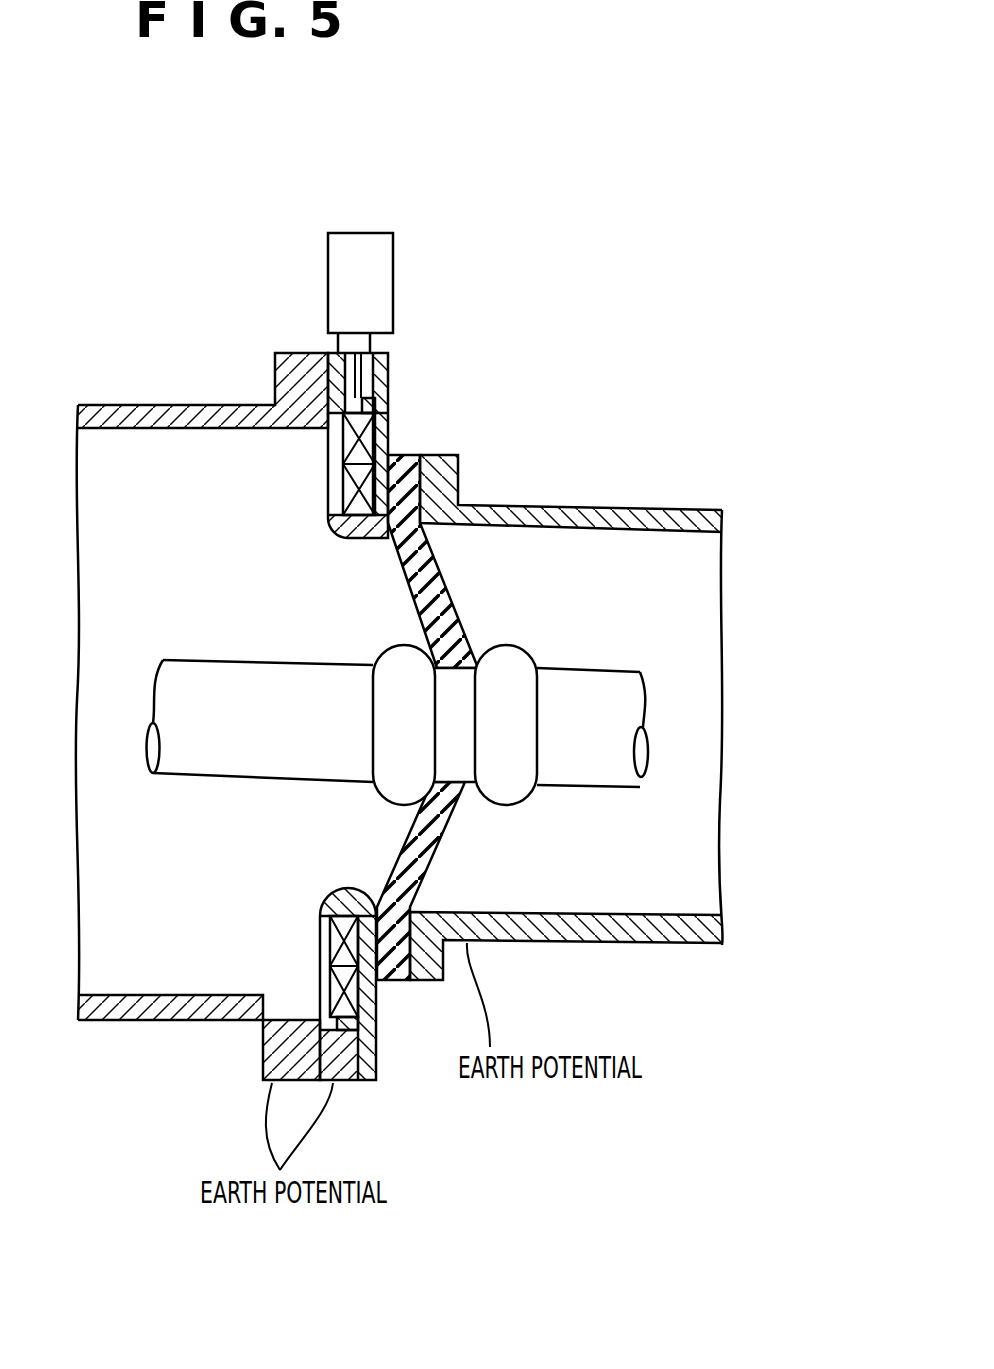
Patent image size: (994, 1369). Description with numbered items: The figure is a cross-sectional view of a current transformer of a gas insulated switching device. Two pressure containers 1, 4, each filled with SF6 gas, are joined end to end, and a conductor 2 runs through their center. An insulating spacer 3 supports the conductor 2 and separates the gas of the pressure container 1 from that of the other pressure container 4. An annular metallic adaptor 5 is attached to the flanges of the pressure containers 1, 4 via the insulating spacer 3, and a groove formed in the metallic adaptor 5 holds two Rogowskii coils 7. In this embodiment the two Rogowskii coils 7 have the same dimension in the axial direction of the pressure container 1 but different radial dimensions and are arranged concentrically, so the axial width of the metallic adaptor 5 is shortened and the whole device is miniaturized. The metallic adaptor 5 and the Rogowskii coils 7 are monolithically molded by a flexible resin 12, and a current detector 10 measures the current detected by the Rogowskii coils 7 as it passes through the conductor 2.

The pressure container 1 is at (103, 410).
The conductor 2 is at (193, 765).
The insulating spacer 3 is at (400, 452).
The pressure container 4 is at (636, 512).
The metallic adaptor 5 is at (388, 375).
The Rogowskii coils 7 is at (342, 488).
The current detector 10 is at (377, 270).
The resin 12 is at (383, 402).